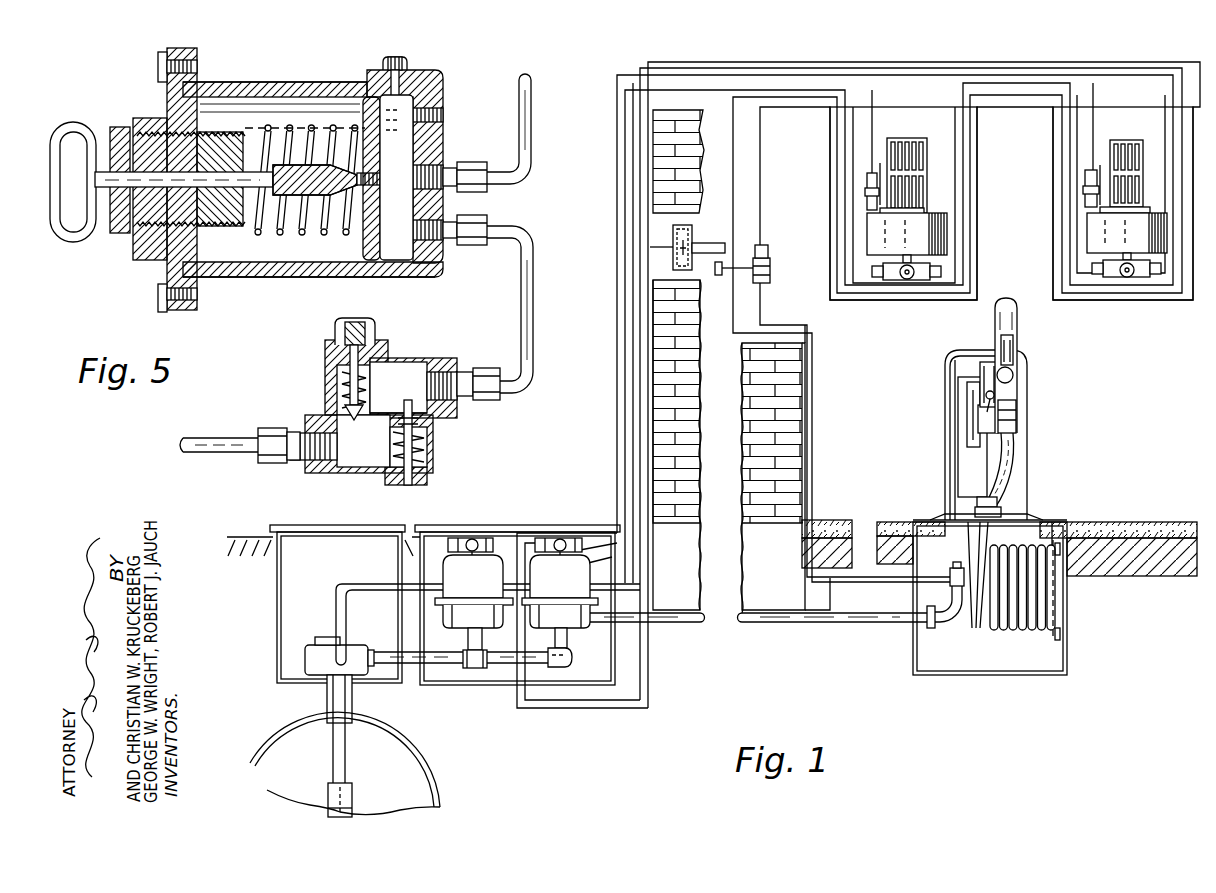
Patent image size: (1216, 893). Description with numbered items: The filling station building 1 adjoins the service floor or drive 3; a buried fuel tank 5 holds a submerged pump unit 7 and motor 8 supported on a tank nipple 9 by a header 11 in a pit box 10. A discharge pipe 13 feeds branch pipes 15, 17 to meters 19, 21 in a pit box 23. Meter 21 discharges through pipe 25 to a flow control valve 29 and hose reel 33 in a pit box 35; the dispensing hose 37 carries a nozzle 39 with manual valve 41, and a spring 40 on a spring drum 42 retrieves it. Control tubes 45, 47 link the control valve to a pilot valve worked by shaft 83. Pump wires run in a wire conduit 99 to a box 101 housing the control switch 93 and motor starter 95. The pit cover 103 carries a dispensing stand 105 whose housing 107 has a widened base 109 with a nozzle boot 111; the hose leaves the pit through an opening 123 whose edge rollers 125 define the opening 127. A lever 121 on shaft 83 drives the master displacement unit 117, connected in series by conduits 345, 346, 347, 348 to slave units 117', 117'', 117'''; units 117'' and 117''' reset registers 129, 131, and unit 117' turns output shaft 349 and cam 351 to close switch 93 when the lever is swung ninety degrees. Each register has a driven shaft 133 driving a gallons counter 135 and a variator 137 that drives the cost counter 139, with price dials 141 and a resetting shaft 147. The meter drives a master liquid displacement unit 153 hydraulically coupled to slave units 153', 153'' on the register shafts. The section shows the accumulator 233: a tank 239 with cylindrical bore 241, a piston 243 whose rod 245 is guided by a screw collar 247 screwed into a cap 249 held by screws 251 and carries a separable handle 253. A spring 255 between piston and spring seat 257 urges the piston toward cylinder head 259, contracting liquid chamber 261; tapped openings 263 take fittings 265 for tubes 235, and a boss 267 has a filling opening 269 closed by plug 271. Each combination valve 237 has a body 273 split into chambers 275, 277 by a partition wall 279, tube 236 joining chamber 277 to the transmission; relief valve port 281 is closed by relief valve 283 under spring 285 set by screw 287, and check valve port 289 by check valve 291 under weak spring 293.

In FIG. 1, the filling station building 1 is at (792, 389).
In FIG. 1, the service floor or drive 3 is at (1124, 521).
In FIG. 1, the buried fuel tank 5 is at (423, 751).
In FIG. 1, the submerged pump unit 7 is at (350, 784).
In FIG. 1, the motor 8 is at (355, 812).
In FIG. 1, the tank nipple 9 is at (327, 708).
In FIG. 1, the pit box 10 is at (277, 600).
In FIG. 1, the header 11 is at (317, 647).
In FIG. 1, the discharge pipe 13 is at (448, 660).
In FIG. 1, the branch pipe 15 is at (482, 643).
In FIG. 1, the branch pipe 17 is at (567, 639).
In FIG. 1, the meter 19 is at (487, 596).
In FIG. 1, the meter 21 is at (574, 596).
In FIG. 1, the pit box 23 is at (490, 686).
In FIG. 1, the pipe 25 is at (740, 625).
In FIG. 1, the flow control valve 29 is at (957, 594).
In FIG. 1, the hose reel 33 is at (970, 633).
In FIG. 1, the pit box 35 is at (960, 678).
In FIG. 1, the dispensing hose 37 is at (1008, 457).
In FIG. 1, the dispensing nozzle 39 is at (1017, 350).
In FIG. 1, the spring 40 is at (1053, 594).
In FIG. 1, the manually operated valve 41 is at (1013, 375).
In FIG. 1, the spring drum 42 is at (1057, 616).
In FIG. 1, the control tube 45 is at (967, 384).
In FIG. 1, the control tube 47 is at (975, 401).
In FIG. 1, the shaft 83 is at (995, 395).
In FIG. 1, the control switch 93 is at (699, 248).
In FIG. 1, the motor starter 95 is at (696, 234).
In FIG. 1, the wire conduit 99 is at (348, 583).
In FIG. 1, the box 101 is at (673, 236).
In FIG. 1, the cover 103 is at (920, 518).
In FIG. 1, the dispensing stand 105 is at (1028, 473).
In FIG. 1, the housing 107 is at (948, 463).
In FIG. 1, the base portion 109 is at (1033, 512).
In FIG. 1, the nozzle boot 111 is at (1018, 319).
In FIG. 1, the master control displacement unit 117 is at (948, 428).
In FIG. 1, the slave unit 117' is at (788, 251).
In FIG. 1, the slave unit 117'' is at (838, 191).
In FIG. 1, the slave unit 117''' is at (1054, 185).
In FIG. 1, the manually operable lever 121 is at (983, 362).
In FIG. 1, the opening 123 is at (1020, 521).
In FIG. 1, the rollers 125 is at (980, 516).
In FIG. 1, the opening 127 is at (978, 502).
In FIG. 1, the register 129 is at (897, 140).
In FIG. 1, the register 131 is at (1120, 137).
In FIG. 1, the driven shaft 133 is at (920, 259).
In FIG. 1, the gallons counter 135 is at (913, 193).
In FIG. 1, the change speed gearing mechanism 137 is at (920, 238).
In FIG. 1, the cost counter 139 is at (917, 163).
In FIG. 1, the dials 141 is at (927, 209).
In FIG. 1, the shaft 147 is at (873, 190).
In FIG. 1, the liquid displacement unit 153 is at (569, 524).
In FIG. 1, the slave unit 153' is at (925, 298).
In FIG. 1, the slave unit 153'' is at (1142, 299).
In FIG. 5, the accumulator 233 is at (230, 80).
In FIG. 5, the lines 235 is at (531, 110).
In FIG. 5, the line 236 is at (250, 443).
In FIG. 5, the combination check and relief valve 237 is at (302, 473).
In FIG. 5, the tank 239 is at (280, 278).
In FIG. 5, the cylindrical bore 241 is at (228, 266).
In FIG. 5, the piston 243 is at (372, 240).
In FIG. 5, the rod 245 is at (318, 160).
In FIG. 5, the screw collar 247 is at (118, 235).
In FIG. 5, the cap 249 is at (152, 246).
In FIG. 5, the screws 251 is at (160, 64).
In FIG. 5, the separable handle 253 is at (73, 124).
In FIG. 5, the spring 255 is at (286, 230).
In FIG. 5, the spring seat 257 is at (248, 126).
In FIG. 5, the cylinder head 259 is at (440, 150).
In FIG. 5, the liquid chamber 261 is at (398, 250).
In FIG. 5, the tapped openings 263 is at (443, 117).
In FIG. 5, the fittings 265 is at (455, 256).
In FIG. 5, the boss 267 is at (422, 71).
In FIG. 5, the opening 269 is at (410, 91).
In FIG. 5, the plug 271 is at (400, 60).
In FIG. 5, the body 273 is at (433, 358).
In FIG. 5, the inlet chamber 275 is at (398, 374).
In FIG. 5, the chamber 277 is at (367, 464).
In FIG. 5, the partition wall 279 is at (377, 413).
In FIG. 5, the relief valve port 281 is at (327, 416).
In FIG. 5, the relief valve 283 is at (368, 428).
In FIG. 5, the spring 285 is at (340, 386).
In FIG. 5, the screw 287 is at (344, 336).
In FIG. 5, the check valve port 289 is at (433, 423).
In FIG. 5, the check valve 291 is at (433, 436).
In FIG. 5, the spring 293 is at (423, 468).
In FIG. 1, the conduit 345 is at (812, 326).
In FIG. 1, the conduit 346 is at (762, 141).
In FIG. 1, the conduit 347 is at (1017, 100).
In FIG. 1, the conduit 348 is at (1093, 96).
In FIG. 1, the output shaft 349 is at (768, 270).
In FIG. 1, the cam 351 is at (747, 323).